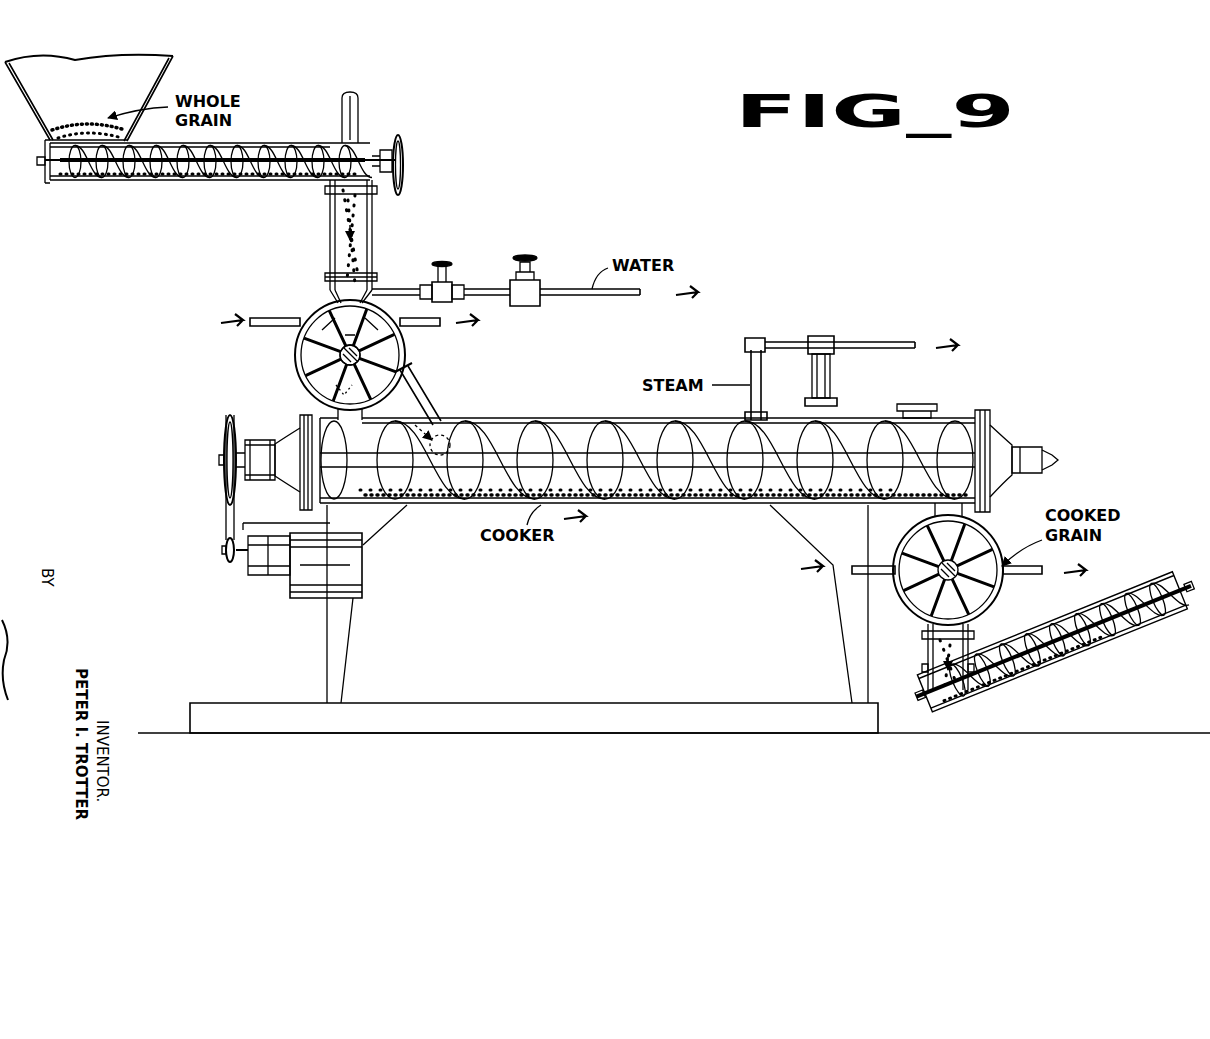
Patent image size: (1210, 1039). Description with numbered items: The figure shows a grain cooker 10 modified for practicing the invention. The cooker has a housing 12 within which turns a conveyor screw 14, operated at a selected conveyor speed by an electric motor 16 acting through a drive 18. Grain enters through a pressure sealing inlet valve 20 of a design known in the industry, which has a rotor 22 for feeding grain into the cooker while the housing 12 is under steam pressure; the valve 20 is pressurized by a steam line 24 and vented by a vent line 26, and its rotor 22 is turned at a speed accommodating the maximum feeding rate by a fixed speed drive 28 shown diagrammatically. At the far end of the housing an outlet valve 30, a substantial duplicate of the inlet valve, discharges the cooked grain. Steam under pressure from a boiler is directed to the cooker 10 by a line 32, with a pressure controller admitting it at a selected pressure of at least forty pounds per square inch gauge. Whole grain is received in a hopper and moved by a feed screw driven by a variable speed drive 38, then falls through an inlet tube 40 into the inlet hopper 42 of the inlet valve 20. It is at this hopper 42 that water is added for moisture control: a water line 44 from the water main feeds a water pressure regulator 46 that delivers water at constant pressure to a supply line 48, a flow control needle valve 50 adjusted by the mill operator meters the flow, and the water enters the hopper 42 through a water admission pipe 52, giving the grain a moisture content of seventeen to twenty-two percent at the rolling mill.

The cooker 10 is at (651, 508).
The housing 12 is at (500, 418).
The conveyor screw 14 is at (431, 504).
The electric motor 16 is at (360, 583).
The drive 18 is at (224, 514).
The pressure sealing inlet valve 20 is at (337, 345).
The rotor 22 is at (339, 355).
The steam line 24 is at (432, 327).
The vent line 26 is at (292, 318).
The fixed speed drive 28 is at (418, 389).
The outlet valve 30 is at (895, 601).
The line 32 is at (862, 342).
The variable speed drive 38 is at (402, 196).
The inlet tube 40 is at (328, 232).
The inlet hopper 42 is at (330, 288).
The water line 44 is at (559, 289).
The water pressure regulator 46 is at (522, 256).
The supply line 48 is at (484, 289).
The flow control needle valve 50 is at (441, 261).
The water admission pipe 52 is at (392, 289).